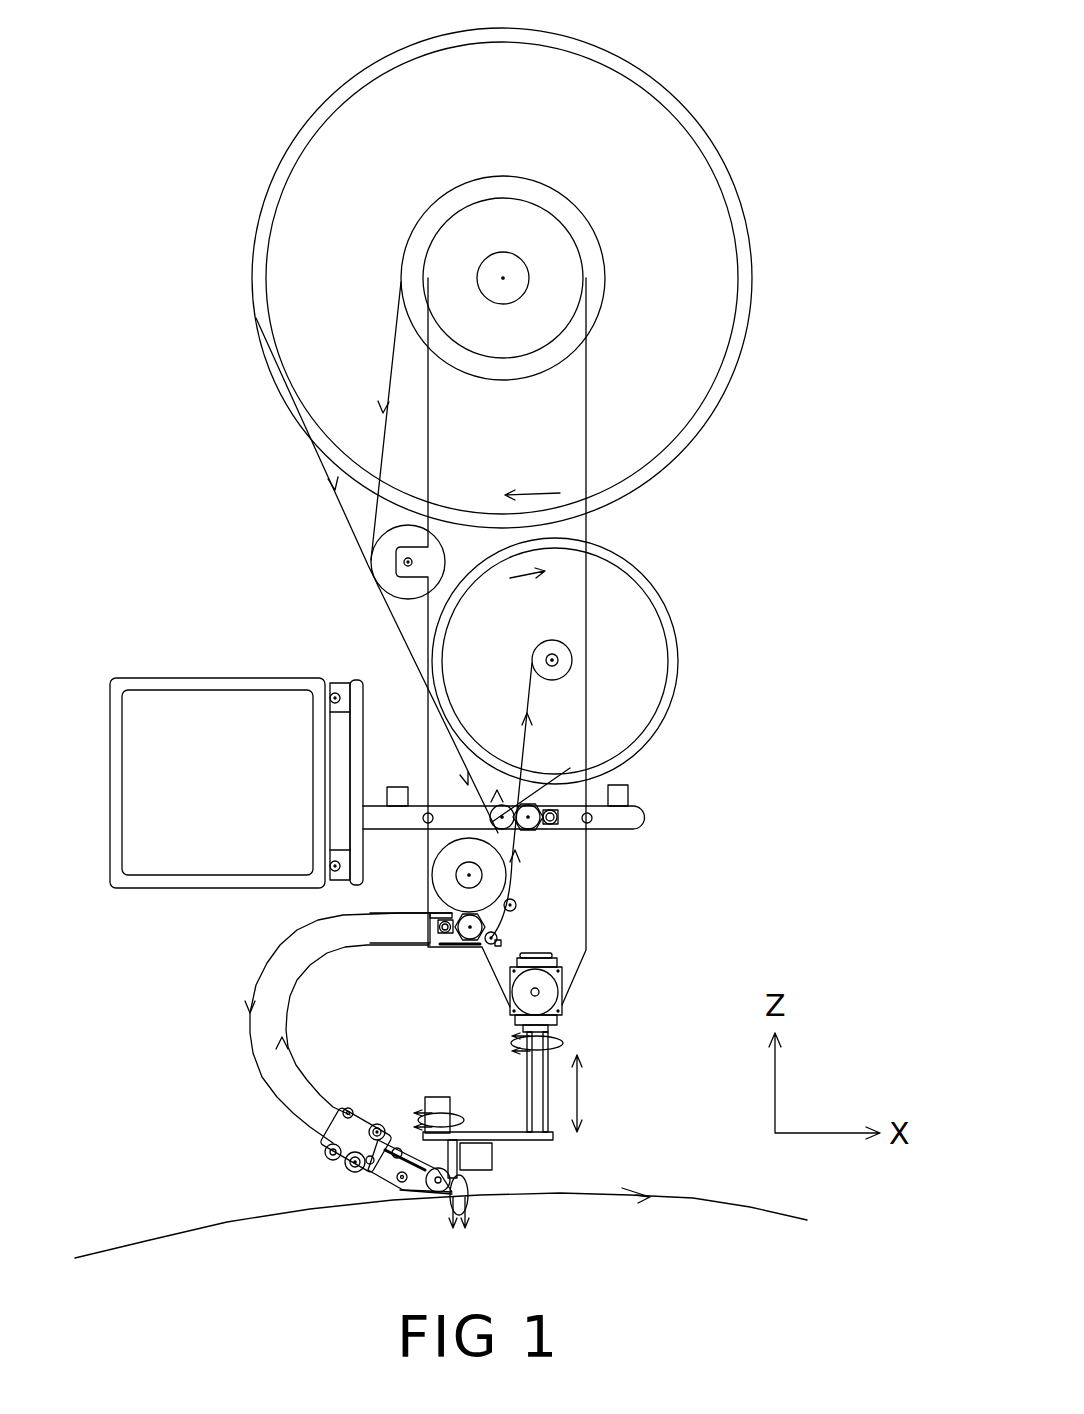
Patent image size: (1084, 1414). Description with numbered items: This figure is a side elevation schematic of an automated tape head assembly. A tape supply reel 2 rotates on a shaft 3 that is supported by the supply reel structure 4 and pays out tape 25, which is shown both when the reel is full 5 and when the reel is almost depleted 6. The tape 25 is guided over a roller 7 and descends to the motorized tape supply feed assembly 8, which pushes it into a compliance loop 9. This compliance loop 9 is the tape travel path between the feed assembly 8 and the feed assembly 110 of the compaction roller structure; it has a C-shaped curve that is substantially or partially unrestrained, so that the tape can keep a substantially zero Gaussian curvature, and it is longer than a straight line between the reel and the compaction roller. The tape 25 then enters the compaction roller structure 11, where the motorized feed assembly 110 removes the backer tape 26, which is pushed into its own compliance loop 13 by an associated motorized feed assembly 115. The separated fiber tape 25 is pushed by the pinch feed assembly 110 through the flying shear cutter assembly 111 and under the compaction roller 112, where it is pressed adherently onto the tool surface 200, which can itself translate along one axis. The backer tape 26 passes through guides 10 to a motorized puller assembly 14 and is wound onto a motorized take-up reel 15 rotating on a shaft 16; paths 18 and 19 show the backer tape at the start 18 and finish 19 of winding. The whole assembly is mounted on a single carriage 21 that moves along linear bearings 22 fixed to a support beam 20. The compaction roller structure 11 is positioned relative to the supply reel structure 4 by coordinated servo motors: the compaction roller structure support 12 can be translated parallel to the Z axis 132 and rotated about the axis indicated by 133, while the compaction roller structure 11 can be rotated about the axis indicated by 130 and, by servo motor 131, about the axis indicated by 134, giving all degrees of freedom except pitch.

The tape supply reel 2 is at (300, 133).
The shaft 3 is at (508, 257).
The supply reel structure 4 is at (592, 398).
The tape when reel is full 5 is at (320, 477).
The tape when reel is almost depleted 6 is at (383, 382).
The roller 7 is at (373, 577).
The motorized tape supply feed assembly 8 is at (458, 915).
The compliance loop 9 is at (258, 980).
The guides 10 is at (470, 955).
The compaction roller structure 11 is at (338, 1176).
The compaction roller structure support 12 is at (527, 1065).
The compliance loop 13 is at (297, 1073).
The motorized puller assembly 14 is at (535, 832).
The motorized take-up reel 15 is at (657, 593).
The shaft 16 is at (572, 658).
The backer tape path at start of winding 18 is at (533, 720).
The backer tape path at finish of winding 19 is at (545, 778).
The support beam 20 is at (165, 678).
The carriage 21 is at (353, 680).
The linear bearings 22 is at (343, 880).
The tape 25 is at (383, 623).
The backer tape 26 is at (383, 947).
The motorized feed assembly 110 is at (322, 1183).
The flying shear cutter assembly 111 is at (377, 1190).
The compaction roller 112 is at (437, 1192).
The motorized feed assembly 115 is at (377, 1120).
The axis of rotation of compaction roller structure 130 is at (443, 1110).
The servo motor 131 is at (478, 1156).
The Z axis 132 is at (583, 1088).
The axis of rotation of compaction roller structure support 133 is at (563, 1043).
The axis of rotation of compaction roller structure 134 is at (467, 1205).
The tool surface 200 is at (718, 1208).